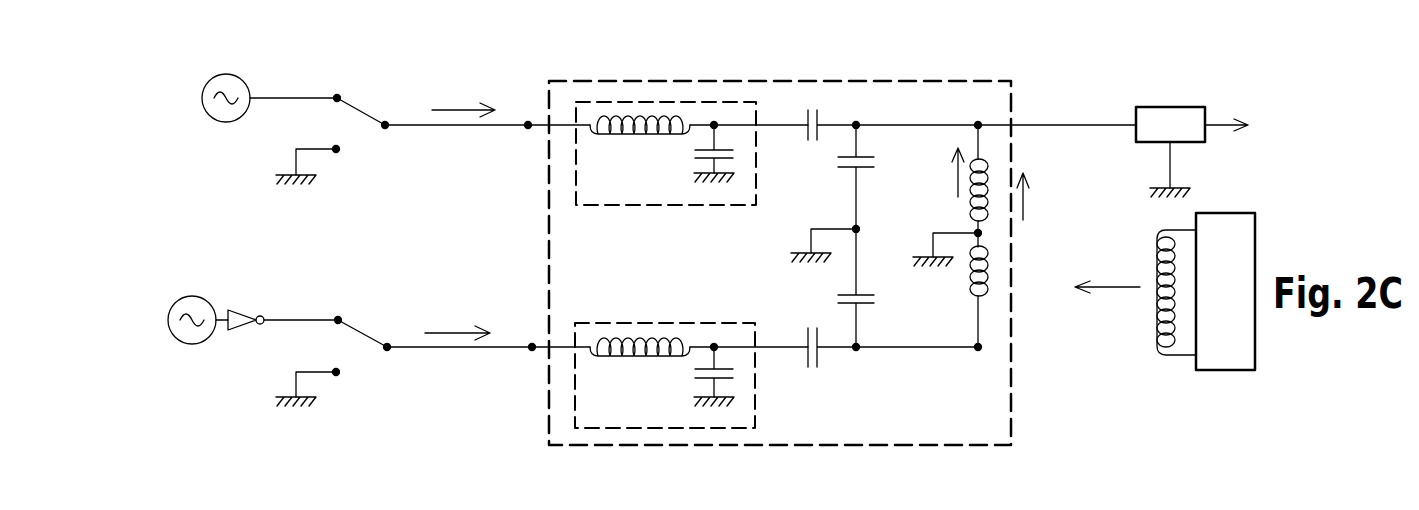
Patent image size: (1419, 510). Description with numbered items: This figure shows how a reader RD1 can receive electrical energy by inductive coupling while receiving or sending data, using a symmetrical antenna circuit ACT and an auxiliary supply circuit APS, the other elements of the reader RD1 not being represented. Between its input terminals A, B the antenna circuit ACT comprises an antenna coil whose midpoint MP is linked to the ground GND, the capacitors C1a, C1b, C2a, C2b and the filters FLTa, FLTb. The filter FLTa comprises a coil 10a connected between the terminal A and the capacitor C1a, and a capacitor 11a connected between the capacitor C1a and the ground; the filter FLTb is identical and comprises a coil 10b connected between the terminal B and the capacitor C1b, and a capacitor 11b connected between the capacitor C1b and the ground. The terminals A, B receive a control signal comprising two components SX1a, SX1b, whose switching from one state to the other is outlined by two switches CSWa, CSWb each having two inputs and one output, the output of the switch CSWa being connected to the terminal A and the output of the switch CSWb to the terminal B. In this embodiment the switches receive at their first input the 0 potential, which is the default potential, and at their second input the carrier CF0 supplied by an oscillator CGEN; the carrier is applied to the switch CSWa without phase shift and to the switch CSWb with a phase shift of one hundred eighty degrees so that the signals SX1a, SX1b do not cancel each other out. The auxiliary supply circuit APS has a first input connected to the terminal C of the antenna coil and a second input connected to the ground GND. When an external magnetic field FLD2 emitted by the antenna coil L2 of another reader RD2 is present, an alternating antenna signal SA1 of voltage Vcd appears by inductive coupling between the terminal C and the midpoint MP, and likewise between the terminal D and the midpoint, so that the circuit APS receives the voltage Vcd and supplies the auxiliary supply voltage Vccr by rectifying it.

The oscillator CGEN is at (226, 122).
The carrier CF0 is at (293, 84).
The switch CSWa is at (358, 110).
The switch CSWb is at (360, 336).
The 0 potential 0 is at (304, 269).
The control signal component SX1a is at (462, 99).
The control signal component SX1b is at (457, 322).
The input terminal A is at (528, 129).
The input terminal B is at (532, 351).
The antenna coil terminal C is at (978, 111).
The antenna coil terminal D is at (979, 361).
The filter FLTa is at (692, 189).
The filter FLTb is at (633, 387).
The coil 10a is at (600, 137).
The coil 10b is at (632, 359).
The capacitor 11a is at (697, 150).
The capacitor 11b is at (735, 378).
The capacitor C1a is at (809, 112).
The capacitor C1b is at (820, 356).
The capacitor C2a is at (843, 168).
The capacitor C2b is at (841, 303).
The antenna signal SA1 is at (945, 236).
The midpoint MP is at (974, 231).
The voltage Vcd is at (1042, 198).
The auxiliary supply circuit APS is at (1197, 138).
The auxiliary supply voltage Vccr is at (1253, 125).
The ground GND is at (1181, 187).
The reader RD1 is at (1238, 90).
The reader RD2 is at (1250, 299).
The antenna coil L2 is at (1155, 310).
The external magnetic field FLD2 is at (1107, 274).
The antenna circuit ACT is at (1011, 406).